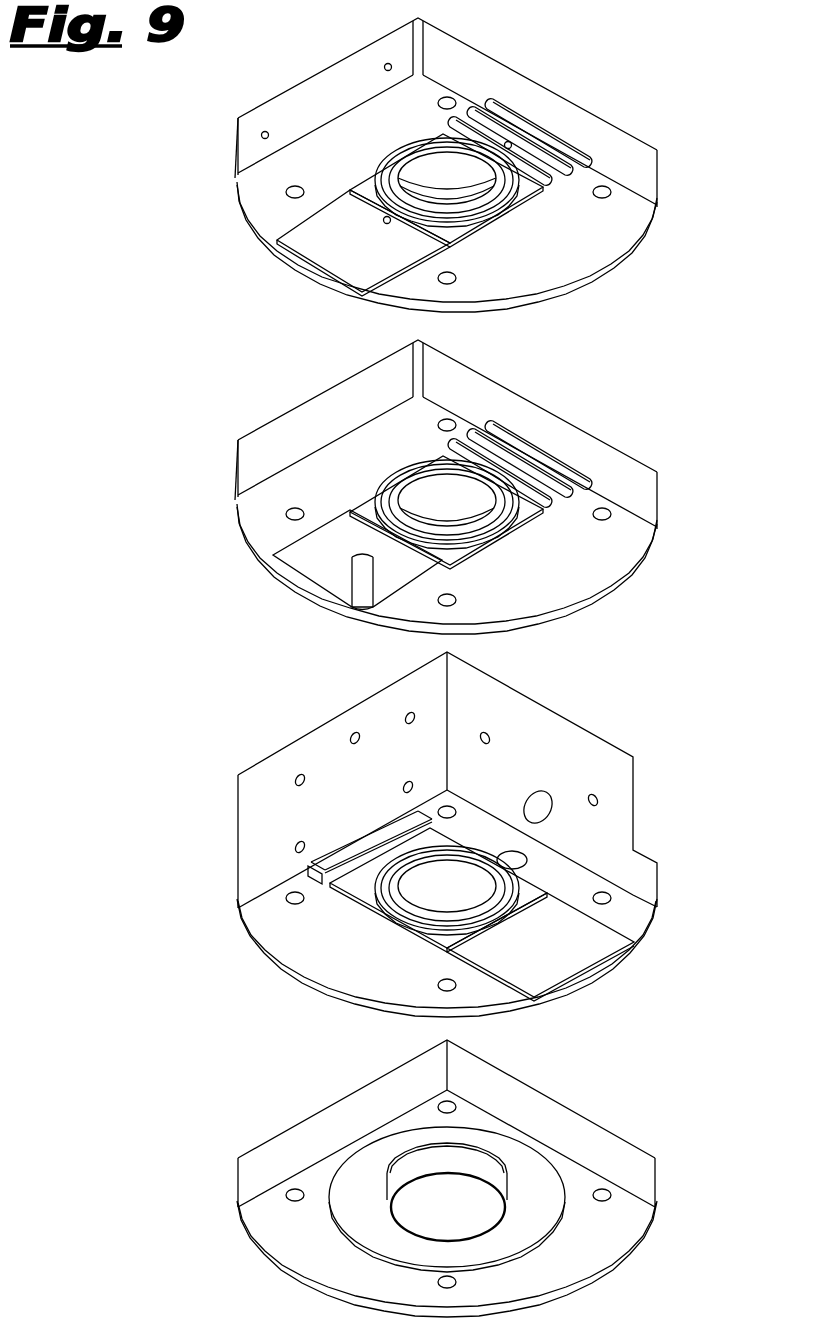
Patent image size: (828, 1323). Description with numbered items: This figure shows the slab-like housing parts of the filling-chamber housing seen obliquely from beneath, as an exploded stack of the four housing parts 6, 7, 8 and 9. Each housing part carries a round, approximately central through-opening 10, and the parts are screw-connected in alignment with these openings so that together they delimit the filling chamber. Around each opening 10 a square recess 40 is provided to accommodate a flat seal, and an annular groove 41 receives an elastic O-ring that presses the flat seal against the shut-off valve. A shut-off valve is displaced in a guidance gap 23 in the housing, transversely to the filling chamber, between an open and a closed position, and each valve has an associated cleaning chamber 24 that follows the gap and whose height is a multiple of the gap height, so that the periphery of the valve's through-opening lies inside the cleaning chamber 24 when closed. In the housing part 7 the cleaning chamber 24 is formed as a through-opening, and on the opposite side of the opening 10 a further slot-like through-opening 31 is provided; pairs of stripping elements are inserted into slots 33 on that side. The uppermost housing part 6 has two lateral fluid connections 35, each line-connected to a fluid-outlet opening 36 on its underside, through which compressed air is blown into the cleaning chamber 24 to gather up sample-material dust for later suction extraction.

The housing part 6 is at (183, 157).
The housing part 7 is at (183, 467).
The housing part 8 is at (183, 821).
The housing part 9 is at (183, 1172).
The through-opening 10 is at (516, 190).
The guidance gap 23 is at (327, 883).
The cleaning chamber 24 is at (317, 565).
The slot-like through-opening 31 is at (538, 487).
The slot 33 is at (528, 455).
The fluid connection 35 is at (386, 64).
The fluid-outlet opening 36 is at (511, 147).
The recess 40 is at (450, 230).
The annular groove 41 is at (512, 182).